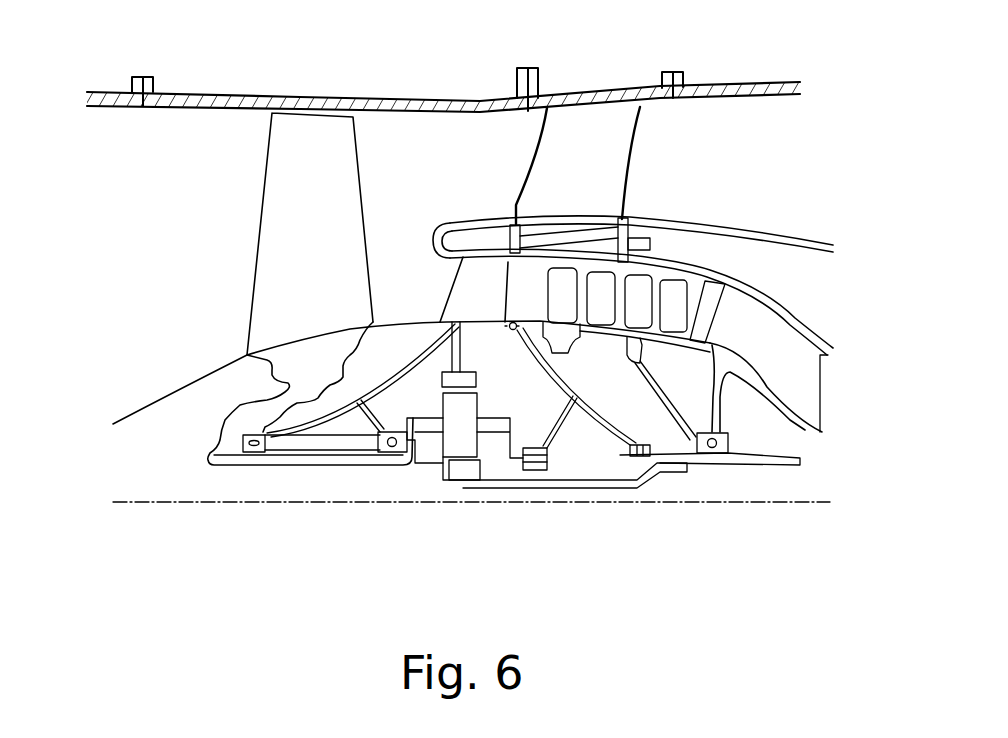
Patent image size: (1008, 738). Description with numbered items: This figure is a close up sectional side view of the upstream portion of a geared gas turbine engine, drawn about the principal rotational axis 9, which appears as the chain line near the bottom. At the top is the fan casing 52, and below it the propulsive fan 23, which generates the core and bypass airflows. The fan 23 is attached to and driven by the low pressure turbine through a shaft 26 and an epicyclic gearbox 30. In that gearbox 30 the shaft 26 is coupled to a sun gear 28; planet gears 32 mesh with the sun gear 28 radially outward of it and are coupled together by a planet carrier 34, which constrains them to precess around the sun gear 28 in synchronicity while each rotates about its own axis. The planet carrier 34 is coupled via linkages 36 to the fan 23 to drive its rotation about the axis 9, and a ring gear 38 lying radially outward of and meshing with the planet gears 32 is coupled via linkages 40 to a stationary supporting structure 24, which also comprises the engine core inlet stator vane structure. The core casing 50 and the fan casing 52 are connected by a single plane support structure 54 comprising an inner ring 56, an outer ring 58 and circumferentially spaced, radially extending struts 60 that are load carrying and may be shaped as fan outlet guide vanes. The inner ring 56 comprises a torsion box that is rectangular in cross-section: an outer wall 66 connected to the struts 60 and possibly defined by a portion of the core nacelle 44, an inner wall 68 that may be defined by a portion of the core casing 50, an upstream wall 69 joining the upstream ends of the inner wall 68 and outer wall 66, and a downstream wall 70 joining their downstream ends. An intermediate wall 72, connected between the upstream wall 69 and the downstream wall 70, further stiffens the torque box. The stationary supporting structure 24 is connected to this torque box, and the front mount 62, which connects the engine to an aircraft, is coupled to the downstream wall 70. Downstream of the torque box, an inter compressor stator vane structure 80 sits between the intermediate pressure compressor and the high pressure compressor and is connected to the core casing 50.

The principal rotational axis 9 is at (240, 507).
The propulsive fan 23 is at (259, 240).
The stationary supporting structure 24 is at (467, 287).
The shaft 26 is at (603, 487).
The sun gear 28 is at (462, 473).
The epicyclic gearbox 30 is at (423, 432).
The planet gears 32 is at (447, 447).
The planet carrier 34 is at (498, 460).
The linkages 36 is at (417, 447).
The ring gear 38 is at (442, 382).
The linkages 40 is at (463, 358).
The core nacelle 44 is at (788, 240).
The core casing 50 is at (705, 277).
The fan casing 52 is at (470, 98).
The single plane support structure 54 is at (635, 193).
The inner ring 56 is at (512, 212).
The outer ring 58 is at (597, 97).
The struts 60 is at (610, 147).
The front mount 62 is at (676, 262).
The outer wall 66 is at (557, 217).
The inner wall 68 is at (510, 230).
The upstream wall 69 is at (509, 245).
The downstream wall 70 is at (650, 243).
The intermediate wall 72 is at (587, 218).
The inter compressor stator vane structure 80 is at (783, 343).